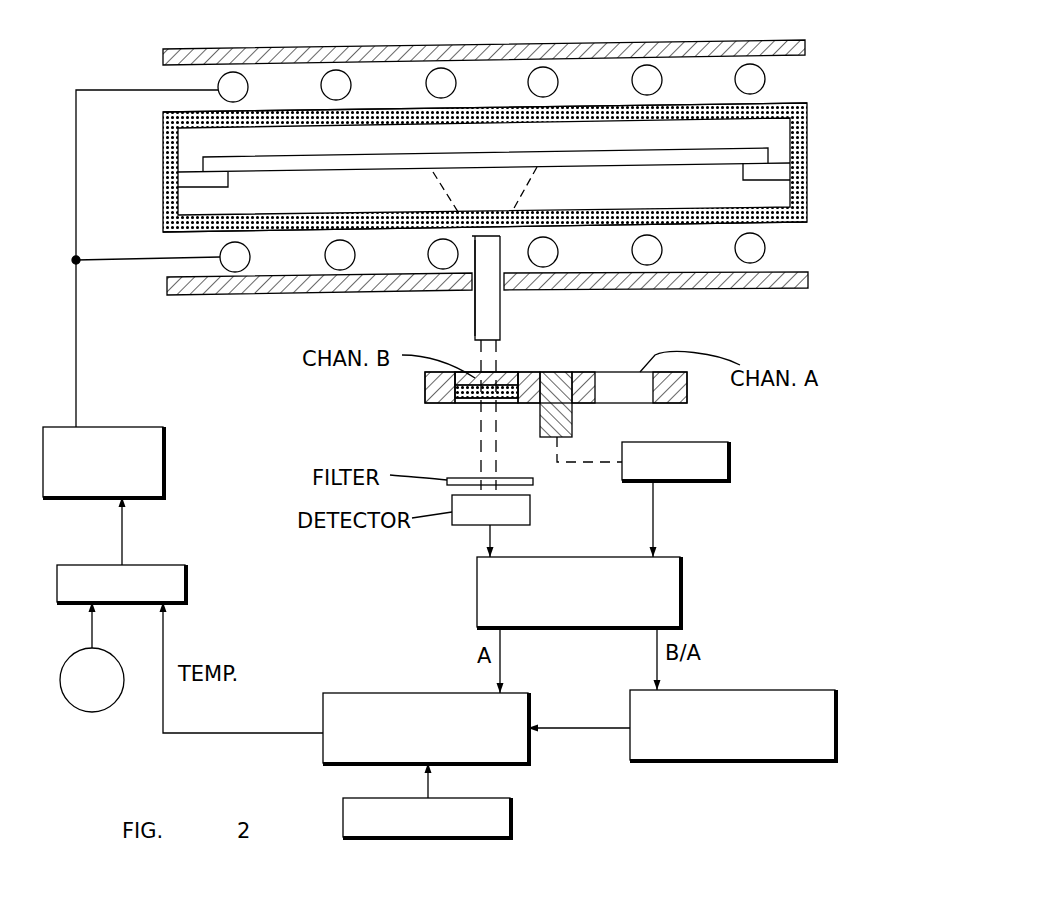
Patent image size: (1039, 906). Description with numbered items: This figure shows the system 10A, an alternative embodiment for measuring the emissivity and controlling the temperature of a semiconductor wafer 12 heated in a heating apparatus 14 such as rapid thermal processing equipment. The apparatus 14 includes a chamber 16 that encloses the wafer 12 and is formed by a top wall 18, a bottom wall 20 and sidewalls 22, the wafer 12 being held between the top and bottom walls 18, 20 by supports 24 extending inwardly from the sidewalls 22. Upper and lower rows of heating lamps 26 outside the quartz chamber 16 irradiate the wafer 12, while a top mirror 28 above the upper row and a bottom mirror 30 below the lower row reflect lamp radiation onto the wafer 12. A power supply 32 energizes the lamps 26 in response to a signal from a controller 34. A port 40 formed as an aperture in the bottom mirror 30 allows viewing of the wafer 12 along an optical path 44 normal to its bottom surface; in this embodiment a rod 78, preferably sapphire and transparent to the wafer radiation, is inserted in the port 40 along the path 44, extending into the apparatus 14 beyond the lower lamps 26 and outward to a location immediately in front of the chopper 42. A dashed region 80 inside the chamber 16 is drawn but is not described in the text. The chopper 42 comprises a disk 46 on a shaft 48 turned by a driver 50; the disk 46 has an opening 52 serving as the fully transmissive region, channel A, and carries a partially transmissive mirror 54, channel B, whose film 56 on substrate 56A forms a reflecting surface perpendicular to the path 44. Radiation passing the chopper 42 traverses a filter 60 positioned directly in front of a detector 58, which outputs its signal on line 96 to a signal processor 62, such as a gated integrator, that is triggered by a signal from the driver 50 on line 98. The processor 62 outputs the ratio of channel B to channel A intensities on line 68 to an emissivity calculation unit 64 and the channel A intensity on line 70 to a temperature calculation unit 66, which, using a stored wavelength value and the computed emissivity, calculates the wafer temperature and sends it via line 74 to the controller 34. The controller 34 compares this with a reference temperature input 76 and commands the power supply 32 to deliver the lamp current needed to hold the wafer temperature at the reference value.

The system 10A is at (716, 315).
The semiconductor wafer 12 is at (670, 148).
The heating apparatus 14 is at (896, 98).
The chamber 16 is at (812, 131).
The top wall 18 is at (805, 104).
The bottom wall 20 is at (785, 224).
The sidewalls 22 is at (790, 165).
The supports 24 is at (772, 181).
The heating lamps 26 is at (766, 80).
The top mirror 28 is at (757, 40).
The bottom mirror 30 is at (768, 289).
The power supply 32 is at (167, 458).
The controller 34 is at (187, 570).
The port 40 is at (500, 293).
The chopper 42 is at (687, 395).
The optical path 44 is at (477, 433).
The disk 46 is at (585, 404).
The shaft 48 is at (558, 372).
The driver 50 is at (728, 455).
The opening 52 is at (653, 397).
The partially transmissive mirror 54 is at (468, 400).
The film 56 is at (497, 378).
The substrate 56A is at (503, 403).
The detector 58 is at (452, 523).
The filter 60 is at (533, 485).
The signal processor 62 is at (682, 583).
The emissivity calculation unit 64 is at (837, 713).
The temperature calculation unit 66 is at (412, 693).
The line 68 is at (657, 652).
The line 70 is at (500, 660).
The line 74 is at (510, 818).
The reference temperature input 76 is at (87, 713).
The rod 78 is at (475, 310).
The field of view 80 is at (530, 187).
The line 96 is at (483, 535).
The line 98 is at (653, 512).